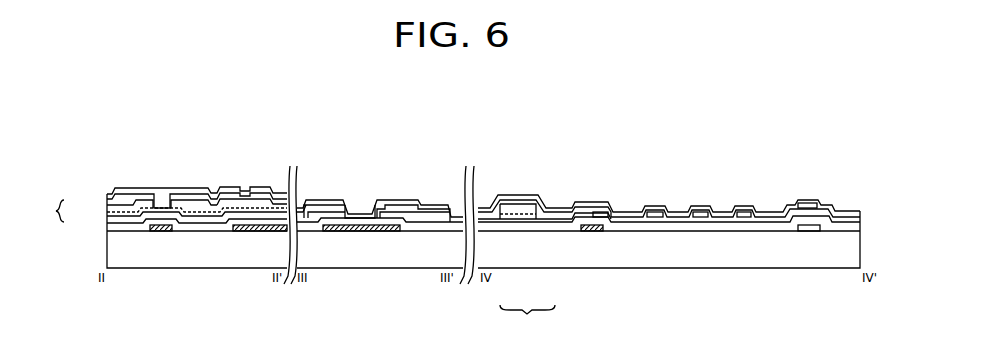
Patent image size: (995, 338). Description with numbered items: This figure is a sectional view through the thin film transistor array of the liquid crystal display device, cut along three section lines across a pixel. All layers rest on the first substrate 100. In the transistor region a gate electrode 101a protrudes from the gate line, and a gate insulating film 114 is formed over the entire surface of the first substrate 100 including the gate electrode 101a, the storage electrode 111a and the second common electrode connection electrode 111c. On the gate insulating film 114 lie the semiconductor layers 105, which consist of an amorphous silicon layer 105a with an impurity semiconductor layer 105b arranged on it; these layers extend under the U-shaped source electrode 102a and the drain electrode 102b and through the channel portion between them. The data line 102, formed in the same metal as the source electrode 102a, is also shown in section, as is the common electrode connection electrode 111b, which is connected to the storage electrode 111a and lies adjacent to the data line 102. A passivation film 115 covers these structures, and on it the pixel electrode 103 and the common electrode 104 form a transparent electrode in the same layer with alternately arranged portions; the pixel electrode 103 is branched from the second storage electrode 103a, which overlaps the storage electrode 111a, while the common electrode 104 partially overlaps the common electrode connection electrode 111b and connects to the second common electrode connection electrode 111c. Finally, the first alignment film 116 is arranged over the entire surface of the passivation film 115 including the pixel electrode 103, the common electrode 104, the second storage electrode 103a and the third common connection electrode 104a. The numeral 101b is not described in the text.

The first substrate 100 is at (107, 256).
The gate electrode 101a is at (160, 232).
The gate electrode 101b is at (592, 232).
The data line 102 is at (512, 203).
The source electrode 102a is at (132, 200).
The drain electrode 102b is at (183, 200).
The pixel electrode 103 is at (655, 212).
The second storage electrode 103a is at (258, 190).
The common electrode 104 is at (602, 212).
The third common connection electrode 104a is at (395, 205).
The semiconductor layer 105 is at (293, 265).
The amorphous silicon layer 105a is at (107, 219).
The impurity semiconductor layer 105b is at (107, 210).
The storage electrode 111a is at (255, 232).
The common electrode connection electrode 111b is at (808, 232).
The second common electrode connection electrode 111c is at (370, 232).
The gate insulating film 114 is at (107, 227).
The passivation film 115 is at (150, 193).
The first alignment film 116 is at (213, 188).